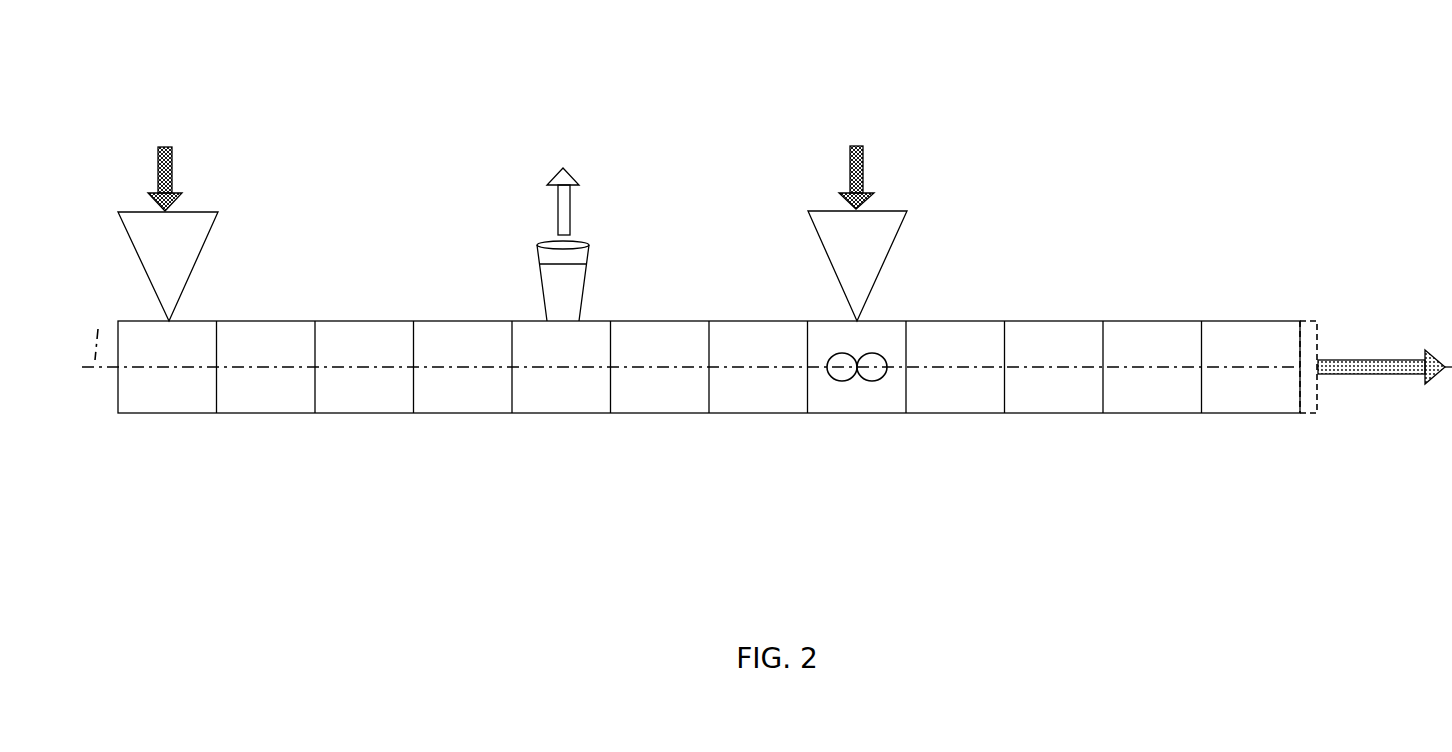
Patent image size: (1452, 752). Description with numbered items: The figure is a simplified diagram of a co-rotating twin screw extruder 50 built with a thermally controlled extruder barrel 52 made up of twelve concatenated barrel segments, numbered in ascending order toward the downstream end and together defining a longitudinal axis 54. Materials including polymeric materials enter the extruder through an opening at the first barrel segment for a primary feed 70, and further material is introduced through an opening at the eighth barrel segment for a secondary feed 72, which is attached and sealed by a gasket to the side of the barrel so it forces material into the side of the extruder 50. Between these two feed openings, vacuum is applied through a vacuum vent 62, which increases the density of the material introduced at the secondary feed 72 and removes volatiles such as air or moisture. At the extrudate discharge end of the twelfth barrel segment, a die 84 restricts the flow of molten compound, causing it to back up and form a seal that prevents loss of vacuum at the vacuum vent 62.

The co-rotating twin screw extruder 50 is at (1176, 57).
The extruder barrel 52 is at (276, 310).
The longitudinal axis 54 is at (691, 336).
The vacuum vent 62 is at (567, 296).
The primary feed 70 is at (190, 246).
The secondary feed 72 is at (870, 258).
The die 84 is at (1310, 331).